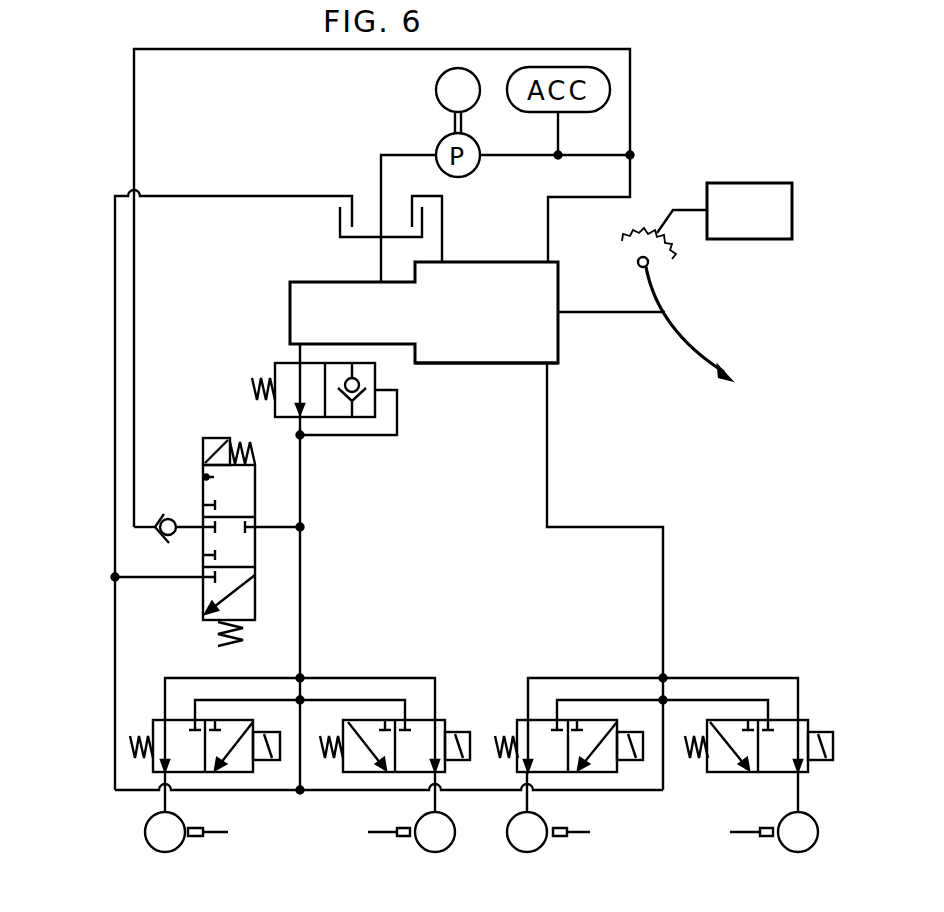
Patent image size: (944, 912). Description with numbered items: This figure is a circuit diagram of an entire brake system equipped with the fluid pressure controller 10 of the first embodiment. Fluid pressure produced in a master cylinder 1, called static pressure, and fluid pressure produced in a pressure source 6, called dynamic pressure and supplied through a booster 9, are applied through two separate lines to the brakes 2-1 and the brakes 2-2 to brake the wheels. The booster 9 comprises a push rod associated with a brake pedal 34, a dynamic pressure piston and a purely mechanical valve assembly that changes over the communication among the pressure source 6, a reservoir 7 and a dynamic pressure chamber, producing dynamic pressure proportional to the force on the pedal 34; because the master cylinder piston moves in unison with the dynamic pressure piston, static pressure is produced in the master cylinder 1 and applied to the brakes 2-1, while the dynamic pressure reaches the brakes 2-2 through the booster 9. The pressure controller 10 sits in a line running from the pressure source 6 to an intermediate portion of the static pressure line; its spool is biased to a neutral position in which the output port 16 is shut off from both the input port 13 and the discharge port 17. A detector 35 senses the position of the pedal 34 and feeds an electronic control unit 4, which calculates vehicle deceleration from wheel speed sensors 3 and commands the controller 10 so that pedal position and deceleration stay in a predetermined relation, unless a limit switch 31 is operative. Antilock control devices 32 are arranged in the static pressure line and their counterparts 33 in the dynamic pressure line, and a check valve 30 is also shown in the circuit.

The master cylinder 1 is at (290, 282).
The electronic control unit 4 is at (738, 183).
The pressure source 6 is at (436, 90).
The reservoir 7 is at (338, 228).
The booster 9 is at (517, 352).
The fluid pressure controller 10 is at (211, 434).
The input port 13 is at (203, 525).
The output port 16 is at (255, 527).
The discharge port 17 is at (203, 580).
The check valve 30 is at (163, 516).
The limit switch 31 is at (275, 363).
The antilock control devices 32 is at (153, 720).
The antilock control devices in the dynamic pressure line 33 is at (805, 720).
The brake pedal 34 is at (704, 346).
The detector 35 is at (645, 228).
The brakes 2-1 is at (178, 840).
The brakes 2-2 is at (533, 843).
The wheel speed sensors 3 is at (403, 838).